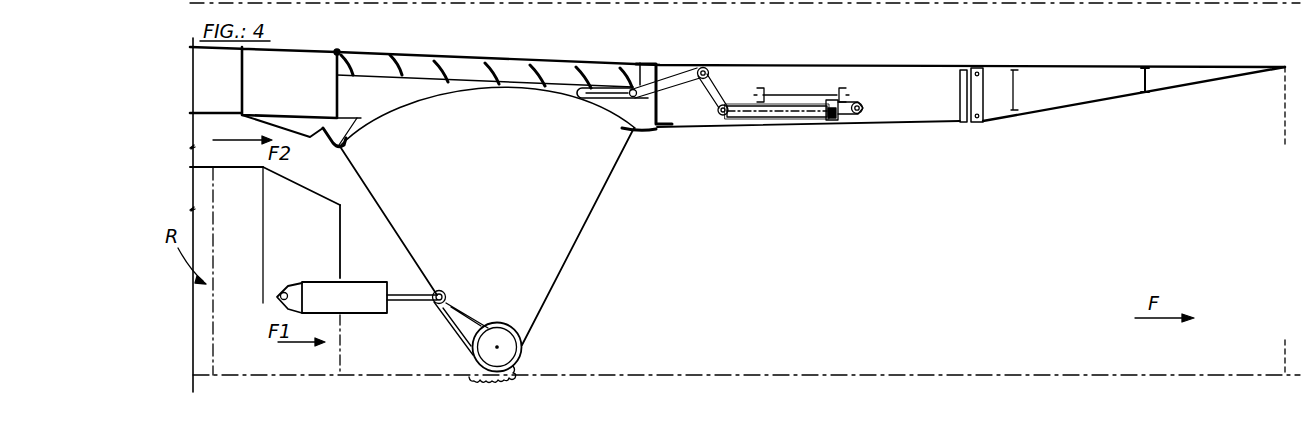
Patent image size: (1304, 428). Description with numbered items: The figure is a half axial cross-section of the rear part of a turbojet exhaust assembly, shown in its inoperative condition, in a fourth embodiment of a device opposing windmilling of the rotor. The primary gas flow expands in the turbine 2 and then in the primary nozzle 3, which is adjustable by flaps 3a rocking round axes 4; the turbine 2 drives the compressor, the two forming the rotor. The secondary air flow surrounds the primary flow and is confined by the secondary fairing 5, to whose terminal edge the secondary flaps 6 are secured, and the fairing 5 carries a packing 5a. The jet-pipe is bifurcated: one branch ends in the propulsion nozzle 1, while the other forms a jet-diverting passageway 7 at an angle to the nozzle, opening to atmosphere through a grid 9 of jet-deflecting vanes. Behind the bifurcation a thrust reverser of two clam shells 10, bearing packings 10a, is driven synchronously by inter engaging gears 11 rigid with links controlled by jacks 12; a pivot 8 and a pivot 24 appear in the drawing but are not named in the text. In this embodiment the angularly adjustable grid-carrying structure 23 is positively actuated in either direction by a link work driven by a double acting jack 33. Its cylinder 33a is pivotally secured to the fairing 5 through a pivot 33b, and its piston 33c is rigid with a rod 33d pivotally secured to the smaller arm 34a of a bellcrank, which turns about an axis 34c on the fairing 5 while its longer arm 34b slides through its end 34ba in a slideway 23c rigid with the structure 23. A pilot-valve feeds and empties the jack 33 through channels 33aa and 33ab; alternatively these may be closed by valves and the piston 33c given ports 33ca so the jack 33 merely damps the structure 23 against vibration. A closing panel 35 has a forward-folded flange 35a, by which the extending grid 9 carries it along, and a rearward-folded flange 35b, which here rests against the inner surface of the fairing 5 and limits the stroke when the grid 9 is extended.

The propulsion nozzle 1 is at (1050, 301).
The turbine 2 is at (233, 219).
The primary nozzle 3 is at (306, 274).
The flaps 3a is at (288, 185).
The axes 4 is at (262, 170).
The secondary fairing 5 is at (217, 98).
The packing 5a is at (333, 150).
The secondary flaps 6 is at (1100, 81).
The jet-diverting passageway 7 is at (420, 83).
The pivot 8 is at (351, 119).
The grid 9 is at (513, 73).
The clam shells 10 is at (584, 210).
The packing 10a is at (648, 135).
The inter engaging gears 11 is at (483, 353).
The jacks 12 is at (373, 290).
The angularly adjustable grid-carrying structure 23 is at (385, 42).
The slideway 23c is at (597, 96).
The belt pivot 24 is at (346, 36).
The double acting jack 33 is at (797, 126).
The cylinder 33a is at (798, 95).
The channel 33aa is at (761, 88).
The channel 33ab is at (845, 90).
The pivot 33b is at (865, 107).
The piston 33c is at (833, 121).
The ports 33ca is at (842, 122).
The rod 33d is at (748, 112).
The smaller arm 34a is at (719, 92).
The longer arm 34b is at (673, 82).
The end of longer arm 34ba is at (621, 132).
The axis 34c is at (704, 68).
The closing panel 35 is at (661, 108).
The flange 35a is at (648, 60).
The flange 35b is at (652, 133).